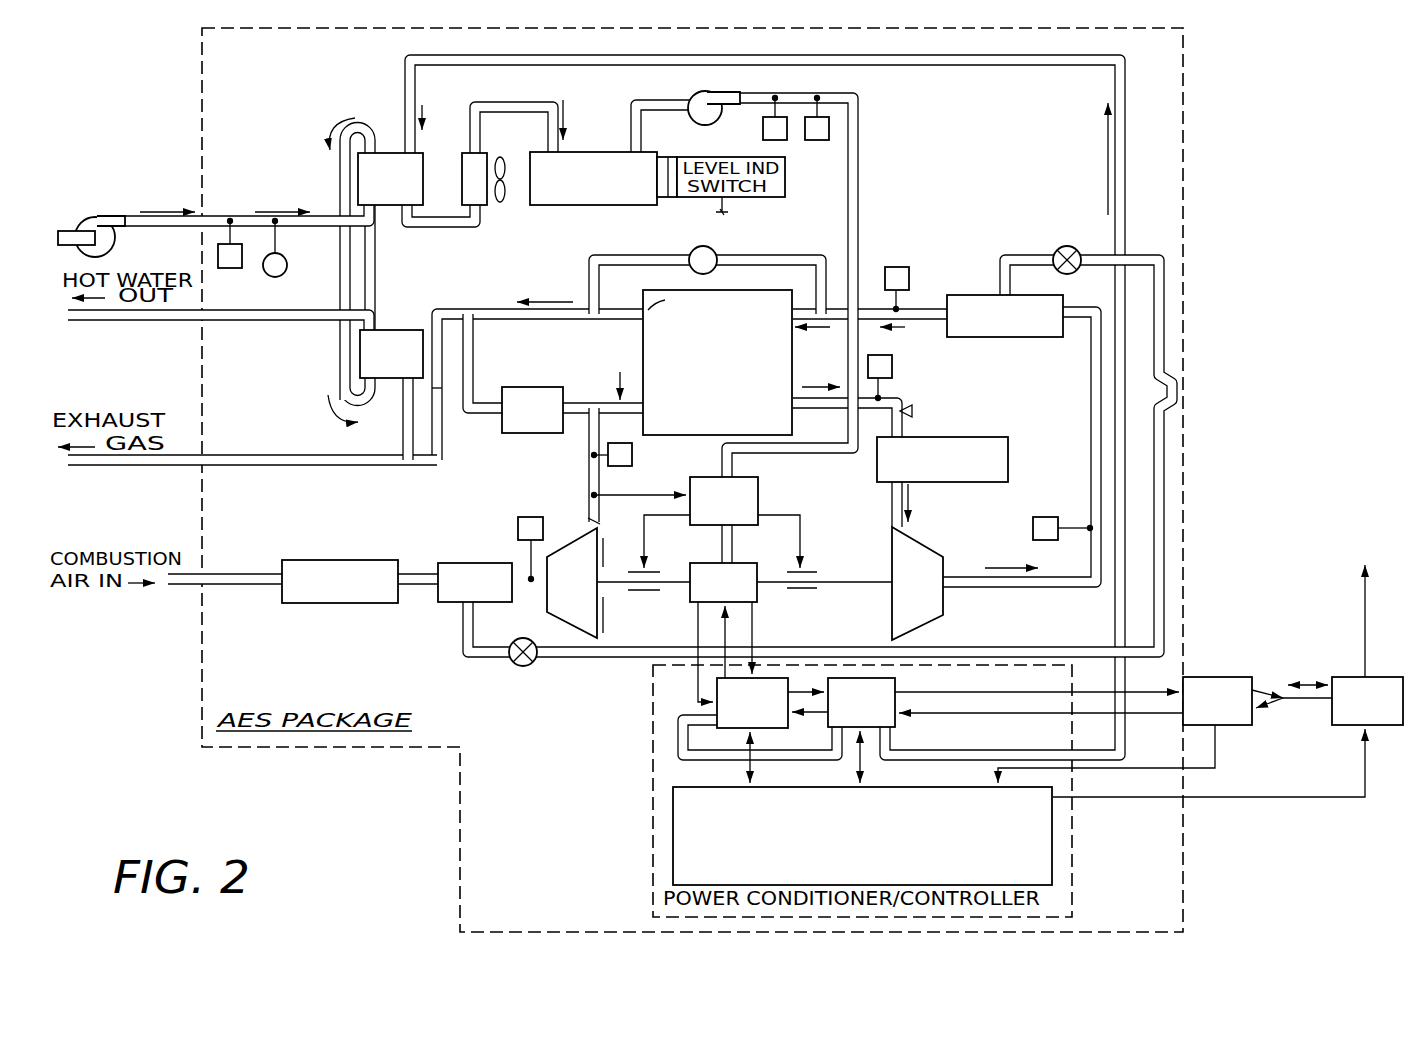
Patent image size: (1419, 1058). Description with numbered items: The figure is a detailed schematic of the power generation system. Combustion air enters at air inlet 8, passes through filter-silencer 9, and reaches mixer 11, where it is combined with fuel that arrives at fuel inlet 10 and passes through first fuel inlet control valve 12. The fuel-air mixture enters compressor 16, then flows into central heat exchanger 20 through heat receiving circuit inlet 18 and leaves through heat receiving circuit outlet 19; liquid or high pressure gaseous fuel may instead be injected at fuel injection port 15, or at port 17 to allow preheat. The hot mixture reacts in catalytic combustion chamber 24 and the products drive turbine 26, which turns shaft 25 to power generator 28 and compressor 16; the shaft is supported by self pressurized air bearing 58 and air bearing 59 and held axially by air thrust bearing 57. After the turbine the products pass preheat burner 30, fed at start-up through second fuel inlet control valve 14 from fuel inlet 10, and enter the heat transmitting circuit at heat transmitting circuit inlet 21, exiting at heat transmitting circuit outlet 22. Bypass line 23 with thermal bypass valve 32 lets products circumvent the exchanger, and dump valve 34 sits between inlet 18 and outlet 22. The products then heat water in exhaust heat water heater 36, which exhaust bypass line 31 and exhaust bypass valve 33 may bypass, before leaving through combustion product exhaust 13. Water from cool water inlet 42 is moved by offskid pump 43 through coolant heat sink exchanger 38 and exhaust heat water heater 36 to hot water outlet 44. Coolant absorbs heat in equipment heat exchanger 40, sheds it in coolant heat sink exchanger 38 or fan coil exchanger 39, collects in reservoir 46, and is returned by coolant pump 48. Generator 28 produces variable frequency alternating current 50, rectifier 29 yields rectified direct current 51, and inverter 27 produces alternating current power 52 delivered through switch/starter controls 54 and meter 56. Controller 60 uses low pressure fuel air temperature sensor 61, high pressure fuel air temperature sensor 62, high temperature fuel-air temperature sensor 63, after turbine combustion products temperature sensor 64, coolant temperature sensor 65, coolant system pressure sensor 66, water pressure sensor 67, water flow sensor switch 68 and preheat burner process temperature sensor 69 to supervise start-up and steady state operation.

The air inlet 8 is at (170, 583).
The filter-silencer 9 is at (345, 558).
The fuel inlet 10 is at (1188, 403).
The mixer 11 is at (490, 560).
The first fuel inlet control valve 12 is at (520, 667).
The combustion product exhaust 13 is at (68, 462).
The second fuel inlet control valve 14 is at (1058, 250).
The fuel injection port 15 is at (920, 410).
The compressor 16 is at (572, 618).
The port 17 is at (618, 375).
The heat receiving circuit inlet 18 is at (648, 405).
The heat receiving circuit outlet 19 is at (790, 408).
The central heat exchanger 20 is at (640, 338).
The heat transmitting circuit inlet 21 is at (792, 310).
The heat transmitting circuit outlet 22 is at (667, 299).
The bypass line 23 is at (588, 263).
The catalytic combustion chamber 24 is at (1010, 455).
The shaft 25 is at (862, 590).
The turbine 26 is at (928, 625).
The inverter 27 is at (897, 730).
The generator 28 is at (758, 600).
The rectifier 29 is at (770, 730).
The preheat burner 30 is at (995, 339).
The exhaust bypass line 31 is at (442, 465).
The thermal bypass valve 32 is at (715, 250).
The exhaust bypass valve 33 is at (443, 388).
The dump valve 34 is at (520, 435).
The exhaust heat water heater 36 is at (392, 380).
The coolant heat sink exchanger 38 is at (410, 207).
The fan coil exchanger 39 is at (462, 153).
The equipment heat exchanger 40 is at (760, 485).
The cool water inlet 42 is at (60, 232).
The offskid pump 43 is at (112, 215).
The hot water outlet 44 is at (68, 318).
The reservoir 46 is at (580, 206).
The coolant pump 48 is at (690, 95).
The variable frequency alternating current 50 is at (760, 632).
The rectified direct current 51 is at (812, 680).
The alternating current power 52 is at (1030, 694).
The switch/starter controls 54 is at (1238, 660).
The meter 56 is at (1345, 727).
The air thrust bearing 57 is at (606, 552).
The self pressurized air bearing 58 is at (640, 592).
The air bearing 59 is at (812, 570).
The controller 60 is at (1053, 850).
The low pressure fuel air temperature sensor 61 is at (545, 500).
The high pressure fuel air temperature sensor 62 is at (632, 455).
The high temperature fuel-air temperature sensor 63 is at (892, 358).
The after turbine combustion products temperature sensor 64 is at (1048, 516).
The coolant temperature sensor 65 is at (762, 138).
The coolant system pressure sensor 66 is at (817, 141).
The water pressure sensor 67 is at (232, 268).
The water flow sensor switch 68 is at (272, 277).
The preheat burner process temperature sensor 69 is at (897, 266).